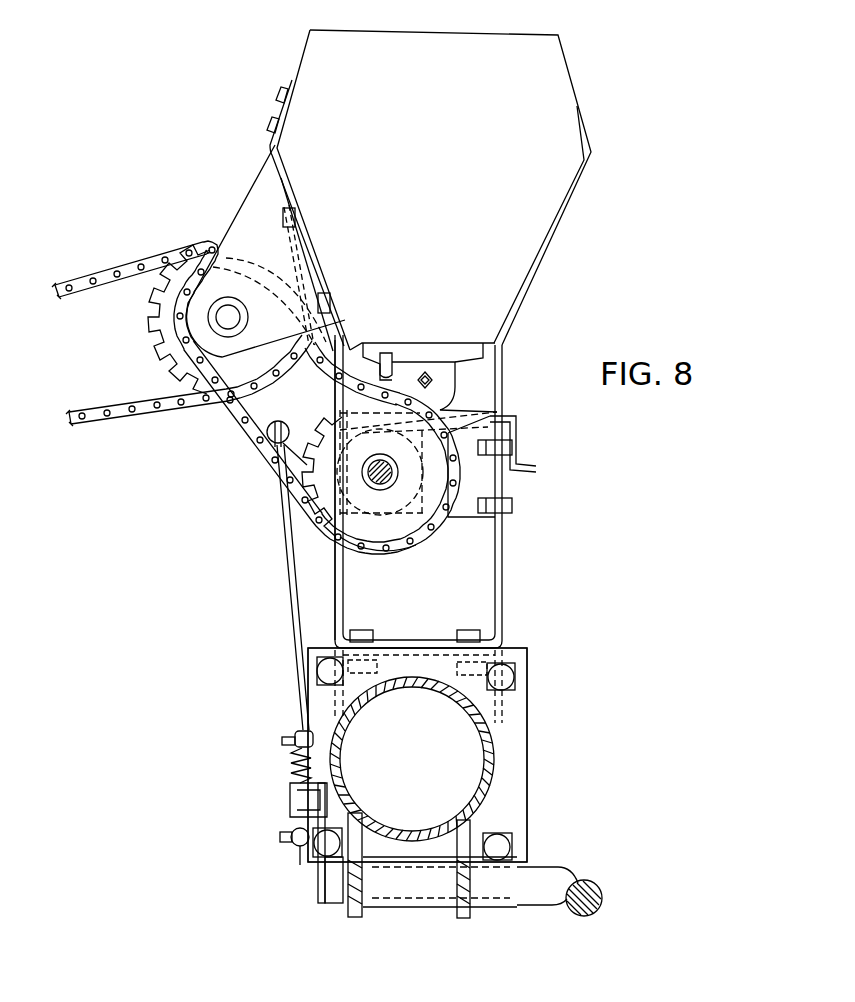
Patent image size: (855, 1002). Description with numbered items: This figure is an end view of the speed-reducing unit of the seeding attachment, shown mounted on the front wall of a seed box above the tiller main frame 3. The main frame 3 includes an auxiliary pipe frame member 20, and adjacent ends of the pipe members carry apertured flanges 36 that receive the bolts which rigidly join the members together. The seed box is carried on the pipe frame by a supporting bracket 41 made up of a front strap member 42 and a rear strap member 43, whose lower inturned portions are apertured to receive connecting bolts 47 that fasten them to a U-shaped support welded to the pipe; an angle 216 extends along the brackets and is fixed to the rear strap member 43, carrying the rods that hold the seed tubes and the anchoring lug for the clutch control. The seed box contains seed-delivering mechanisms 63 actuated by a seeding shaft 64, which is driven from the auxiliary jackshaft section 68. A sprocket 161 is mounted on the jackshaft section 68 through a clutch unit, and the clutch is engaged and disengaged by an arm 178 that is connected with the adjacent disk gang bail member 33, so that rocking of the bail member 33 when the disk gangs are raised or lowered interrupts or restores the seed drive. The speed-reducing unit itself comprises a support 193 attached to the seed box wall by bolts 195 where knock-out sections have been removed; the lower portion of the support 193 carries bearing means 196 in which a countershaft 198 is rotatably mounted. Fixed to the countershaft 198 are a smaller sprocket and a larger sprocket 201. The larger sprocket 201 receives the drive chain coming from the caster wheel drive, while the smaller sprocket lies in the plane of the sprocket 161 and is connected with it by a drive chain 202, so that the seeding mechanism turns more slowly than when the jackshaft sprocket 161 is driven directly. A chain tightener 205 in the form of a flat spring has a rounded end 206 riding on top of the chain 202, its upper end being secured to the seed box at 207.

The main frame 3 is at (537, 683).
The auxiliary pipe frame member 20 is at (490, 752).
The bail member 33 is at (545, 876).
The flange 36 is at (516, 787).
The supporting bracket 41 is at (345, 613).
The front strap member 42 is at (335, 567).
The rear strap member 43 is at (500, 536).
The connecting bolt 47 is at (460, 640).
The seed-delivering mechanism 63 is at (450, 391).
The seeding shaft 64 is at (437, 371).
The auxiliary jackshaft section 68 is at (396, 484).
The sprocket 161 is at (378, 532).
The arm 178 is at (333, 817).
The support 193 is at (265, 222).
The bolt 195 is at (318, 300).
The bearing means 196 is at (222, 312).
The countershaft 198 is at (220, 330).
The larger sprocket 201 is at (152, 318).
The drive chain 202 is at (253, 430).
The chain tightener 205 is at (284, 184).
The rounded end 206 is at (392, 377).
The securing point 207 is at (268, 126).
The angle 216 is at (536, 470).